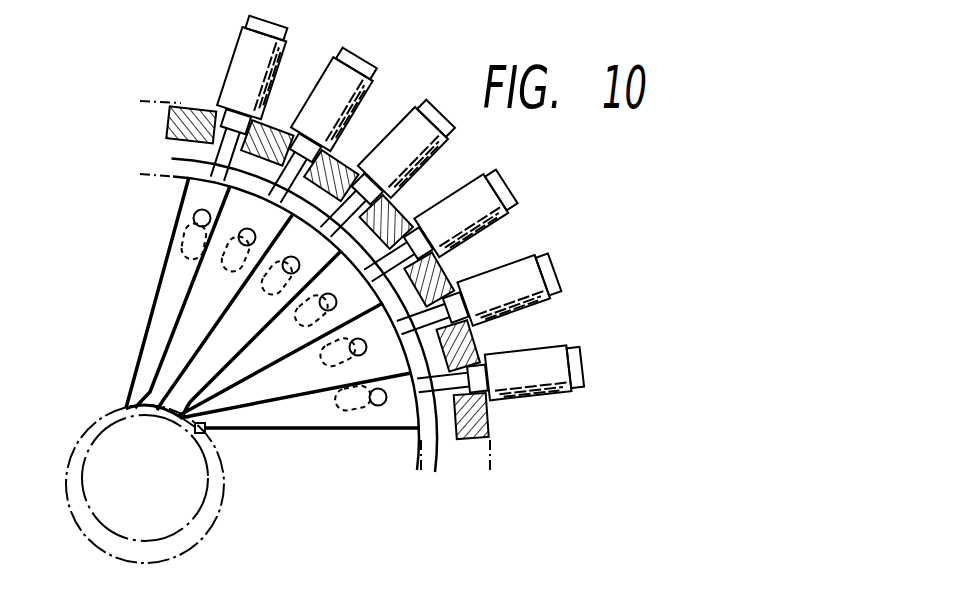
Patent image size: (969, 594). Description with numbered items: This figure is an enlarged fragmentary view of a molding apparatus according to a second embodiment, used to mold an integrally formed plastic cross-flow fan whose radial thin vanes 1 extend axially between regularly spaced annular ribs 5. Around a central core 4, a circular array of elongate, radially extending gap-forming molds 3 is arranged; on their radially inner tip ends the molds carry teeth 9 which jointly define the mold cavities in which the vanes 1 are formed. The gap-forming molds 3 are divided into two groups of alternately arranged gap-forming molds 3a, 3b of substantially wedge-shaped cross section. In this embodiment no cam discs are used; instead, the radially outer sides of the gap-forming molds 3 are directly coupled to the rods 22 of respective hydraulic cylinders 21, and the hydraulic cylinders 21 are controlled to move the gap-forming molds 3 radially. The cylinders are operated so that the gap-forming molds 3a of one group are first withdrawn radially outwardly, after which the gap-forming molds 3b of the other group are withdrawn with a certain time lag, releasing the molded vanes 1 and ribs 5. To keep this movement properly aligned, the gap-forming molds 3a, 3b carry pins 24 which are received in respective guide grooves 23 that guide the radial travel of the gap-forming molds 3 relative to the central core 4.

The vane 1 is at (160, 408).
The gap-forming mold 3 is at (150, 310).
The gap-forming mold of one group 3a is at (143, 358).
The gap-forming mold of the other group 3b is at (163, 375).
The central core 4 is at (95, 476).
The annular rib 5 is at (125, 406).
The tooth 9 is at (206, 433).
The hydraulic cylinder 21 is at (402, 135).
The rod 22 is at (217, 157).
The guide groove 23 is at (186, 248).
The pin 24 is at (194, 220).